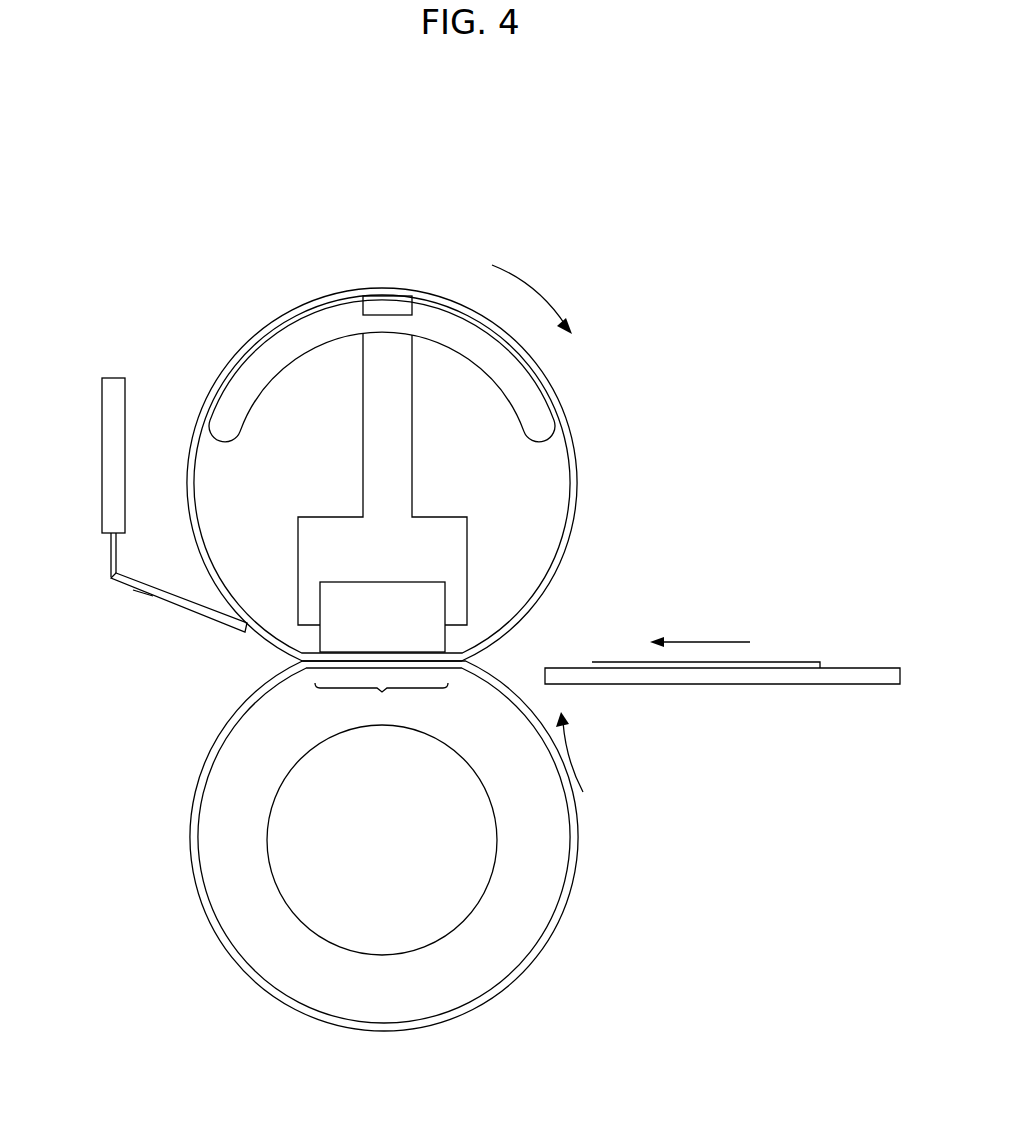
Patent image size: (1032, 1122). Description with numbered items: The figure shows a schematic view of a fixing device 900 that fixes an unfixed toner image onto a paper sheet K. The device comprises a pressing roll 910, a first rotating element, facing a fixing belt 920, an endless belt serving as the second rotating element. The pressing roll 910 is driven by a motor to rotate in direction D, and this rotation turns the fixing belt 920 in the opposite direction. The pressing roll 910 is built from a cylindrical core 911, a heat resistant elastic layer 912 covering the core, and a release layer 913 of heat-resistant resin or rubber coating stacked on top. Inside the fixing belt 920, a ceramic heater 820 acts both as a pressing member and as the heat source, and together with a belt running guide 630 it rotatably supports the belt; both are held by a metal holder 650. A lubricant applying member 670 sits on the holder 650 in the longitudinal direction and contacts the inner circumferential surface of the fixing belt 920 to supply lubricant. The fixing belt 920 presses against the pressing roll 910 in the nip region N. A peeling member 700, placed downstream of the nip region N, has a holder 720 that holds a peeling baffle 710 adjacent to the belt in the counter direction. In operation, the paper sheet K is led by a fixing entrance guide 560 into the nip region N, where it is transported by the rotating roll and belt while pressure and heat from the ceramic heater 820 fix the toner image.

The fixing device 900 is at (409, 156).
The fixing belt 920 is at (578, 508).
The belt running guide 630 is at (540, 393).
The lubricant applying member 670 is at (388, 304).
The holder 650 is at (325, 514).
The ceramic heater 820 is at (426, 592).
The pressing roll 910 is at (434, 865).
The core 911 is at (480, 903).
The heat resistant elastic layer 912 is at (543, 877).
The release layer 913 is at (577, 840).
The peeling member 700 is at (144, 531).
The peeling baffle 710 is at (173, 600).
The holder 720 is at (108, 552).
The fixing entrance guide 560 is at (792, 685).
The paper sheet K is at (776, 661).
The nip region N is at (381, 702).
The direction D is at (581, 752).